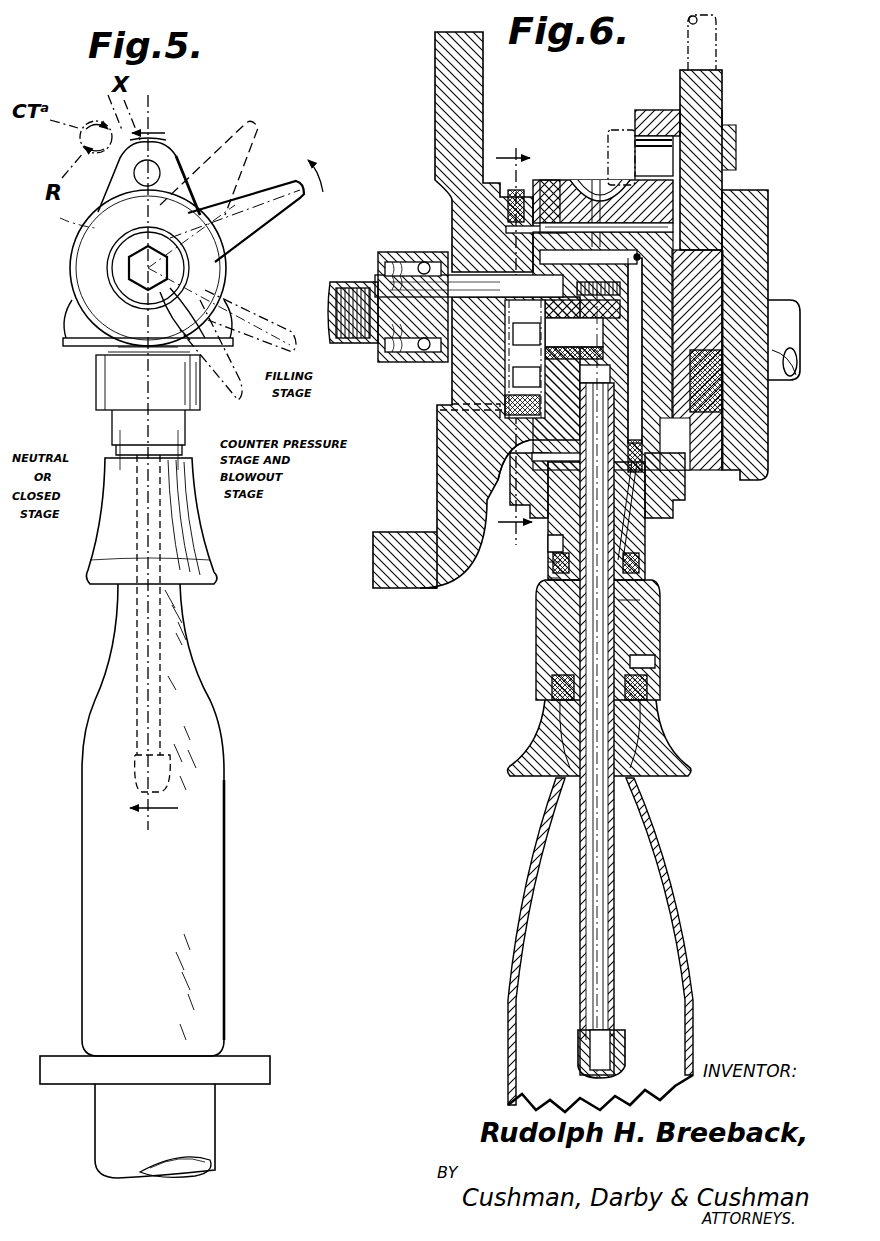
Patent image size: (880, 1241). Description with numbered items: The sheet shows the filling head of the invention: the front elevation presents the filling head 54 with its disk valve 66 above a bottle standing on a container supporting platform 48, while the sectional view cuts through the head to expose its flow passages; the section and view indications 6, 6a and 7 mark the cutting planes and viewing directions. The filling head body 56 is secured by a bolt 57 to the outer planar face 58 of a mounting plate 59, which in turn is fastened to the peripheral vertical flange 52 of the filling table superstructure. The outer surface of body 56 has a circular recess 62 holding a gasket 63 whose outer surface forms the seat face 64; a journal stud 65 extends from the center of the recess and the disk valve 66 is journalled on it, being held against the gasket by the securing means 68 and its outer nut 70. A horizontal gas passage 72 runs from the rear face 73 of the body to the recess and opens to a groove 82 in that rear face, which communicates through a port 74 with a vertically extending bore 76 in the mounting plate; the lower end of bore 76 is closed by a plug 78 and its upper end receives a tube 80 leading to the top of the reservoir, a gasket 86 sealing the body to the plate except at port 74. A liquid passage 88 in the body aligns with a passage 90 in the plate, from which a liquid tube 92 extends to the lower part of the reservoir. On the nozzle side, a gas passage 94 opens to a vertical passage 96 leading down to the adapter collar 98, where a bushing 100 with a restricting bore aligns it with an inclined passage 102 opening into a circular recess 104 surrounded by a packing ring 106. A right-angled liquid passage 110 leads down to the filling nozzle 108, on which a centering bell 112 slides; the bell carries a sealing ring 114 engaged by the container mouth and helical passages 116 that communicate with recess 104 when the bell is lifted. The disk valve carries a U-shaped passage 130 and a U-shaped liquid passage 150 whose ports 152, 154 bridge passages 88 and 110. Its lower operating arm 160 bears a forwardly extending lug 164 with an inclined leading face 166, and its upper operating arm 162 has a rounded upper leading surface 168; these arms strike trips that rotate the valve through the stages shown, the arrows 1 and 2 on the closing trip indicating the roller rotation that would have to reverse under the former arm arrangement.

In FIG. 5, the arrow 1 is at (90, 122).
In FIG. 5, the arrow 2 is at (82, 146).
In FIG. 5, the section line 6 is at (154, 474).
In FIG. 5, the section arrow 6a is at (312, 182).
In FIG. 6, the section line 7 is at (514, 338).
In FIG. 5, the container supporting platform 48 is at (236, 1066).
In FIG. 6, the peripheral vertical flange 52 is at (745, 200).
In FIG. 6, the filling head 54 is at (585, 180).
In FIG. 6, the filling head body 56 is at (597, 186).
In FIG. 6, the bolt 57 is at (618, 130).
In FIG. 6, the outer planar face 58 is at (688, 108).
In FIG. 6, the mounting plate 59 is at (724, 110).
In FIG. 6, the circular recess 62 is at (548, 190).
In FIG. 6, the gasket 63 is at (520, 408).
In FIG. 6, the seat face 64 is at (452, 198).
In FIG. 6, the journal stud 65 is at (475, 300).
In FIG. 5, the disk valve 66 is at (95, 252).
In FIG. 6, the disk valve 66 is at (450, 214).
In FIG. 6, the securing means 68 is at (392, 344).
In FIG. 6, the outer nut 70 is at (358, 275).
In FIG. 6, the horizontal gas passage 72 is at (606, 211).
In FIG. 6, the rear face 73 is at (675, 444).
In FIG. 6, the port 74 is at (724, 244).
In FIG. 6, the vertically extending bore 76 is at (728, 128).
In FIG. 6, the plug 78 is at (705, 412).
In FIG. 6, the tube 80 is at (716, 48).
In FIG. 6, the groove 82 is at (664, 224).
In FIG. 6, the gasket 86 is at (668, 112).
In FIG. 6, the liquid passage 88 is at (603, 352).
In FIG. 6, the passage 90 is at (716, 275).
In FIG. 6, the liquid tube 92 is at (784, 310).
In FIG. 6, the gas passage 94 is at (590, 266).
In FIG. 6, the vertical passage 96 is at (640, 290).
In FIG. 6, the adapter collar 98 is at (648, 542).
In FIG. 6, the bushing 100 is at (656, 506).
In FIG. 6, the inclined passage 102 is at (630, 490).
In FIG. 6, the circular recess 104 is at (642, 566).
In FIG. 6, the packing ring 106 is at (556, 572).
In FIG. 5, the filling nozzle 108 is at (165, 722).
In FIG. 6, the filling nozzle 108 is at (616, 838).
In FIG. 6, the right-angled liquid passage 110 is at (595, 374).
In FIG. 6, the centering bell 112 is at (655, 630).
In FIG. 6, the sealing ring 114 is at (648, 682).
In FIG. 6, the helical passages 116 is at (620, 600).
In FIG. 6, the passage 130 is at (508, 230).
In FIG. 6, the U-shaped liquid passage 150 is at (520, 362).
In FIG. 6, the port 152 is at (528, 334).
In FIG. 6, the port 154 is at (528, 377).
In FIG. 5, the lower operating arm 160 is at (138, 440).
In FIG. 6, the lower operating arm 160 is at (440, 496).
In FIG. 5, the upper operating arm 162 is at (170, 126).
In FIG. 6, the upper operating arm 162 is at (445, 90).
In FIG. 6, the lug 164 is at (415, 588).
In FIG. 5, the leading face 166 is at (210, 405).
In FIG. 5, the upper leading surface 168 is at (112, 350).
In FIG. 6, the upper leading surface 168 is at (452, 412).